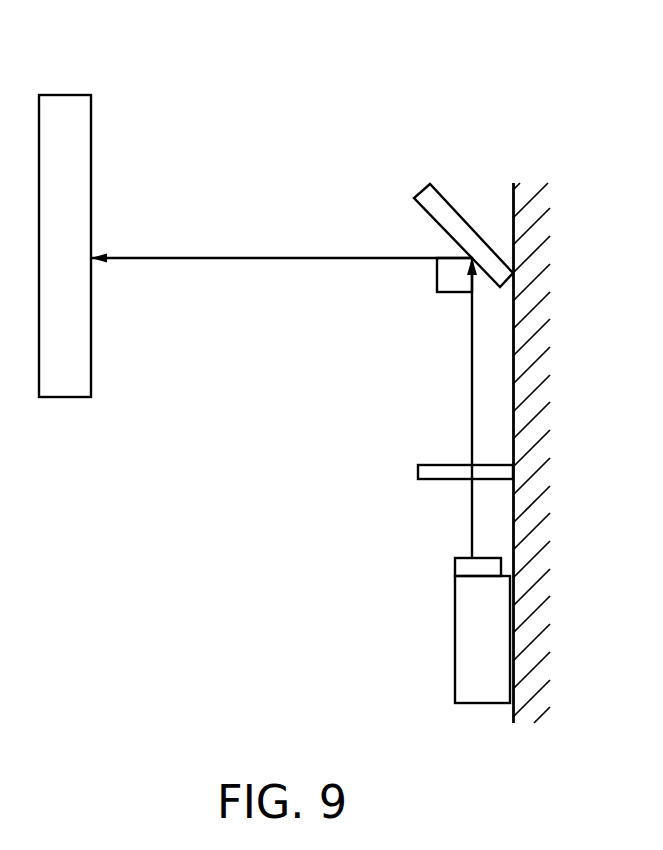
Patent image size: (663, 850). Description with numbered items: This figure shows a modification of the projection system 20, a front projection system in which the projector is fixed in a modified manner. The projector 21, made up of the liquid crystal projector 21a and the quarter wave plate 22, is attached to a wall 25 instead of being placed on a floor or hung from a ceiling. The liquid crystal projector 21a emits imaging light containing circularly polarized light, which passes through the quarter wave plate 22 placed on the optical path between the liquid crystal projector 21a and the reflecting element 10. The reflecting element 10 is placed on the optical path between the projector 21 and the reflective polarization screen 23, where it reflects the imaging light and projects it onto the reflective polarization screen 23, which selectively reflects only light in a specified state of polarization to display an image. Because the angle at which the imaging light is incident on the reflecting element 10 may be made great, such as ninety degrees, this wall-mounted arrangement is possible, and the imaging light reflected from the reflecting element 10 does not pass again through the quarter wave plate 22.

The reflecting element 10 is at (446, 200).
The projection system 20 is at (271, 168).
The projector 21 is at (347, 540).
The liquid crystal projector 21a is at (456, 616).
The quarter wave plate 22 is at (418, 474).
The reflective polarization screen 23 is at (58, 102).
The wall 25 is at (513, 192).